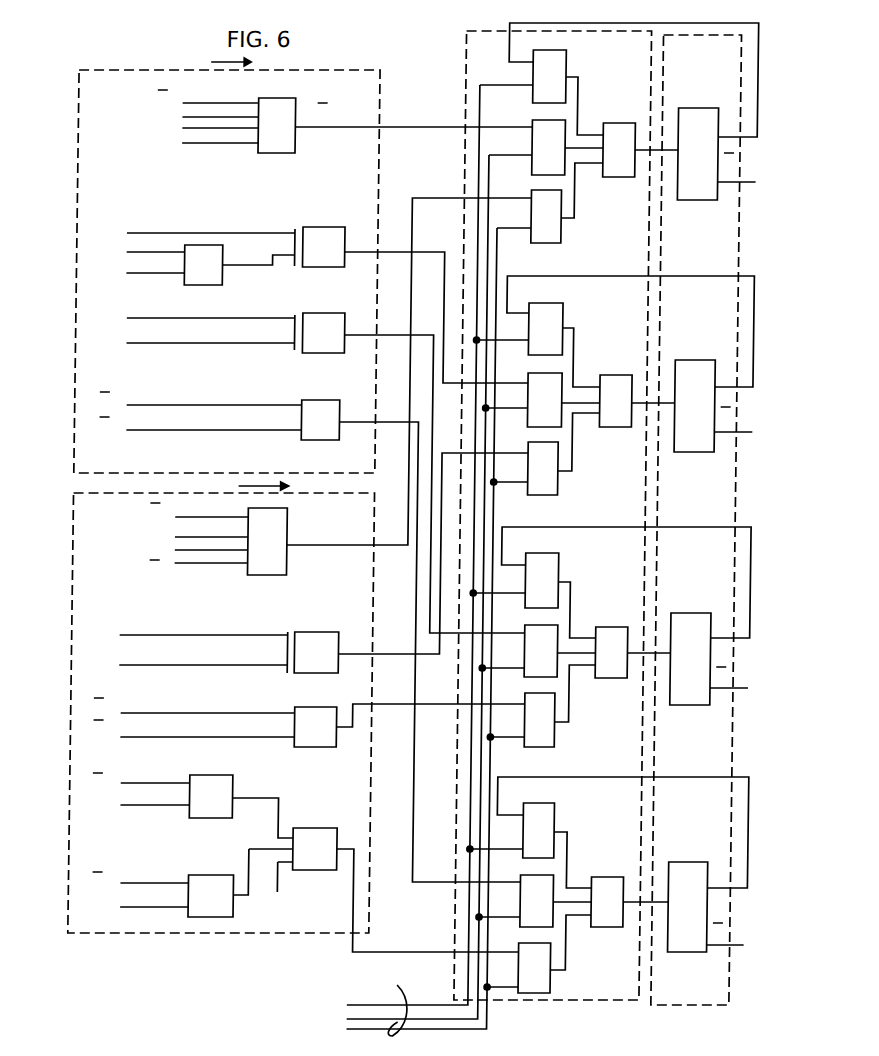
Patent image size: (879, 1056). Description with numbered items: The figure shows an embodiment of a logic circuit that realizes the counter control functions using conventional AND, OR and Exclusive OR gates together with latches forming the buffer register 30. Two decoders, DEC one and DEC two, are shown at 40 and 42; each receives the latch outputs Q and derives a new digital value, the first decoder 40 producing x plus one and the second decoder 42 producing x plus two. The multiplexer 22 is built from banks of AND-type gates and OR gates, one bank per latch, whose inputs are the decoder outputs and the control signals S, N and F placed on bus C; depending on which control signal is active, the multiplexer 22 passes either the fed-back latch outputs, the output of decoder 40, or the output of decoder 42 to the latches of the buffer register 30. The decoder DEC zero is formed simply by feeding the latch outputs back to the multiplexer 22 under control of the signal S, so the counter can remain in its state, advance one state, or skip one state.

The multiplexer 22 is at (467, 66).
The buffer register 30 is at (708, 1005).
The decoder DEC1 40 is at (339, 75).
The decoder DEC2 42 is at (79, 525).